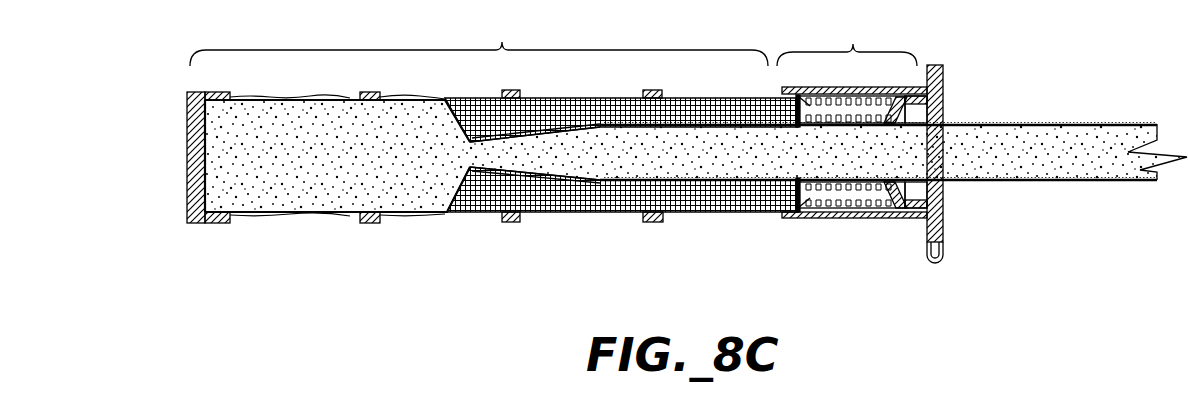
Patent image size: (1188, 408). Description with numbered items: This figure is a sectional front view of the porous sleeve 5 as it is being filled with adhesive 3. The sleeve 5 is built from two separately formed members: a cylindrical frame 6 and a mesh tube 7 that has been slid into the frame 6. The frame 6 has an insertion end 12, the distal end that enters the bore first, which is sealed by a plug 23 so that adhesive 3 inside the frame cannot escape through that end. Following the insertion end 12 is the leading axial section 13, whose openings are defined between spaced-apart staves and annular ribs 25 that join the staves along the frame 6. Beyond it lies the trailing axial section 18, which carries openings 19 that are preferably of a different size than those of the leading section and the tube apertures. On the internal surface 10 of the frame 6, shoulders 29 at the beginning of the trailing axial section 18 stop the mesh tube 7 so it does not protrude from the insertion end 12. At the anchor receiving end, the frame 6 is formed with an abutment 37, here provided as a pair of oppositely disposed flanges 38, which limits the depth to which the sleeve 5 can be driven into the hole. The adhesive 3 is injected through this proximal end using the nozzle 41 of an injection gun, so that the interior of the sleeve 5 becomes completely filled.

The adhesive 3 is at (308, 216).
The porous sleeve 5 is at (654, 157).
The frame 6 is at (812, 220).
The tube 7 is at (466, 92).
The internal surface 10 is at (625, 205).
The insertion end 12 is at (200, 224).
The leading axial section 13 is at (479, 38).
The trailing axial section 18 is at (847, 40).
The openings 19 is at (845, 222).
The plug 23 is at (187, 150).
The ribs 25 is at (220, 224).
The shoulders 29 is at (785, 105).
The abutment 37 is at (925, 215).
The flanges 38 is at (935, 64).
The nozzle 41 is at (470, 190).